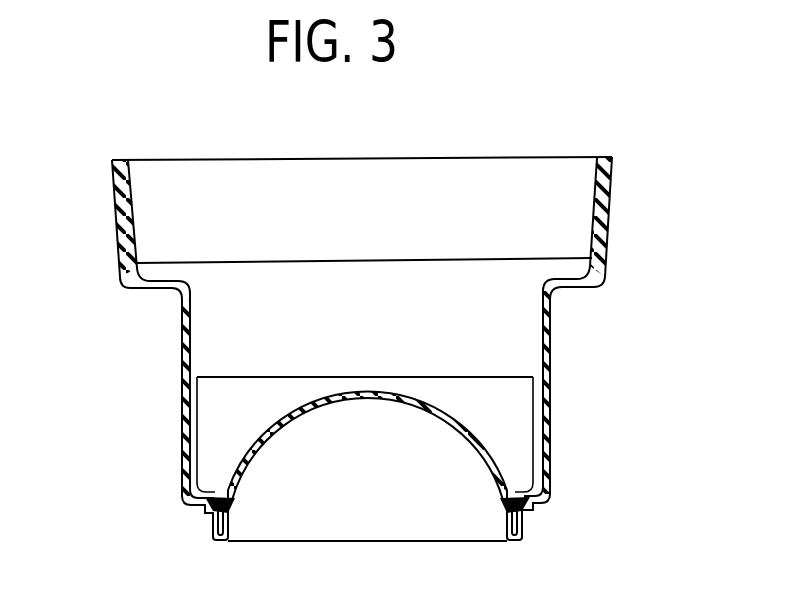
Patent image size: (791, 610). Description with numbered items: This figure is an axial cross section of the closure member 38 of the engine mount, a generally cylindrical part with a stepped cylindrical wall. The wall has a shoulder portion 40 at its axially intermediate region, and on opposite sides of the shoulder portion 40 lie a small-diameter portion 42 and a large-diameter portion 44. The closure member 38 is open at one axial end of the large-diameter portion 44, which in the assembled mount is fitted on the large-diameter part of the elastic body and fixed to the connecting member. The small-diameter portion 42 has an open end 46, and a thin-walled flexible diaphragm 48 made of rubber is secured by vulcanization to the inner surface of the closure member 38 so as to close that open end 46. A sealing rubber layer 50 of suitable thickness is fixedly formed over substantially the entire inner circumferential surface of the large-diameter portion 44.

The closure member 38 is at (588, 343).
The shoulder portion 40 is at (162, 291).
The small-diameter portion 42 is at (181, 357).
The large-diameter portion 44 is at (112, 207).
The open end 46 is at (228, 519).
The flexible diaphragm 48 is at (473, 445).
The sealing rubber layer 50 is at (592, 207).